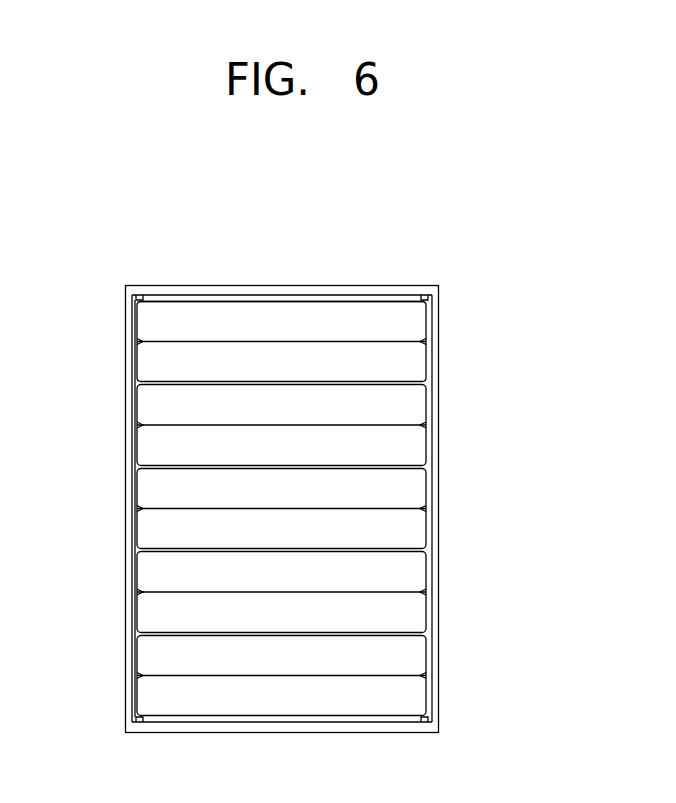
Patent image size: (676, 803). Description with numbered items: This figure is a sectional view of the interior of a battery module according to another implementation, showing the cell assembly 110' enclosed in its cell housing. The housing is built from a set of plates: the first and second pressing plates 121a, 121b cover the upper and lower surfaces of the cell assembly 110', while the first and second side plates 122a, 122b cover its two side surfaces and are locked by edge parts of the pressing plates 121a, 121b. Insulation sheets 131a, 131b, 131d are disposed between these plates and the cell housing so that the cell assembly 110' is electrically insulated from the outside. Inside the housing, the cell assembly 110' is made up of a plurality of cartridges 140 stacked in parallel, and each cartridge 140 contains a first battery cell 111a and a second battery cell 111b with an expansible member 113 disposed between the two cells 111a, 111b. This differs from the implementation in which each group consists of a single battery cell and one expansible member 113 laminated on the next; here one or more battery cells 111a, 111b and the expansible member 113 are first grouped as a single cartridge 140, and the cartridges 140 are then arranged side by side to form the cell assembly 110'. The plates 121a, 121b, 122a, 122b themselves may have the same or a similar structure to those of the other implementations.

The cell assembly 110' is at (313, 471).
The first pressing plate 121a is at (283, 294).
The second pressing plate 121b is at (251, 724).
The first side plate 122a is at (434, 445).
The second side plate 122b is at (131, 453).
The cartridge 140 is at (136, 347).
The insulation sheet 131a is at (342, 300).
The insulation sheet 131b is at (318, 719).
The insulation sheet 131d is at (428, 510).
The first battery cell 111a is at (424, 318).
The second battery cell 111b is at (424, 364).
The expansible member 113 is at (423, 341).